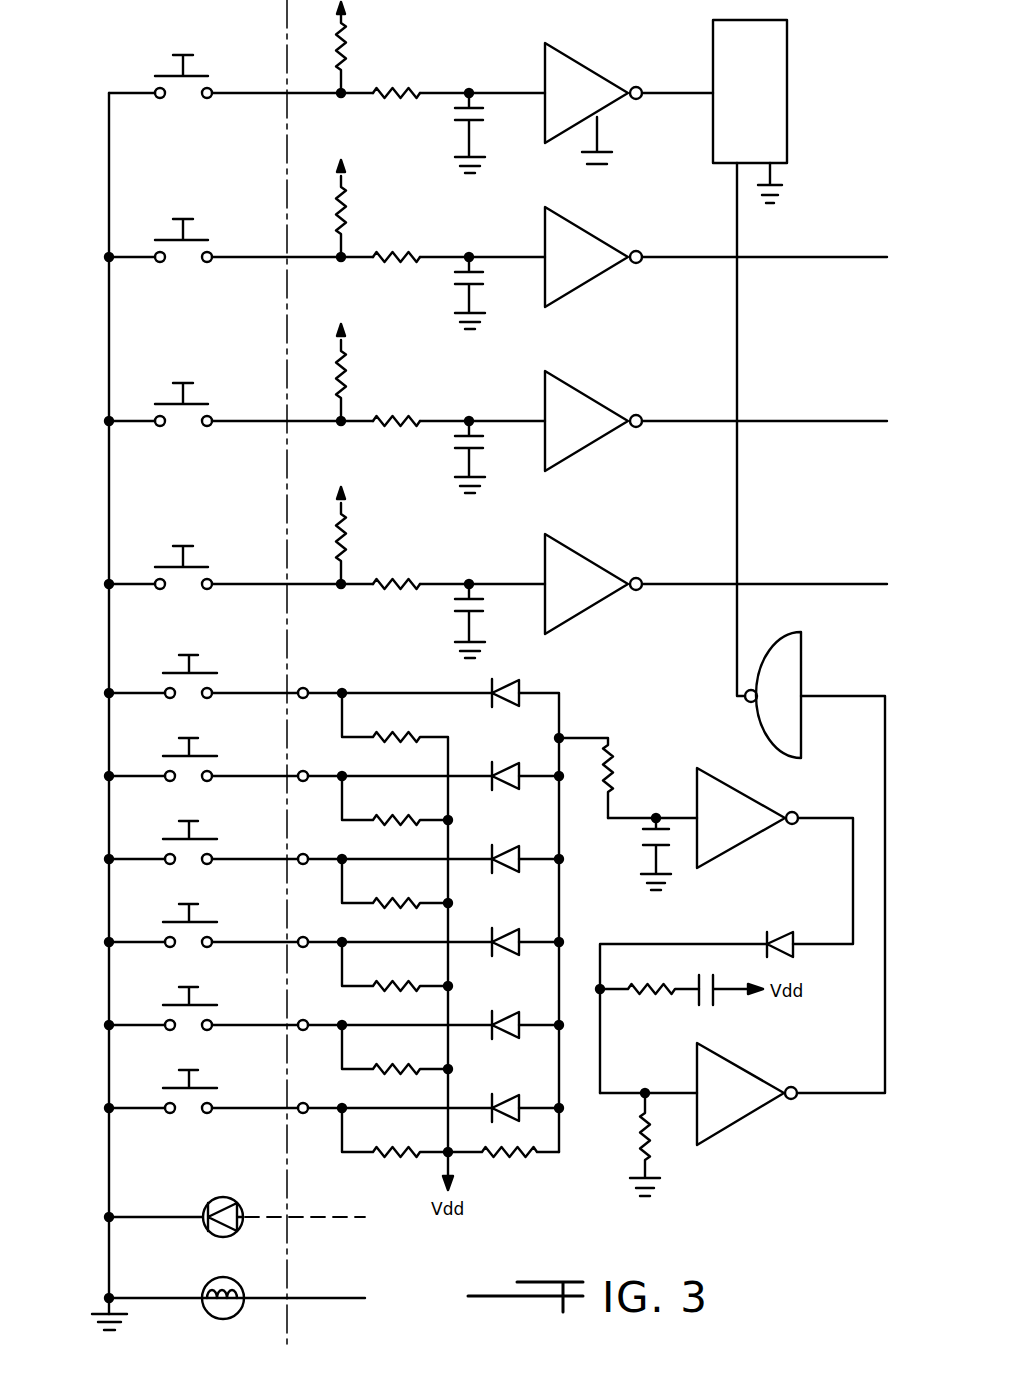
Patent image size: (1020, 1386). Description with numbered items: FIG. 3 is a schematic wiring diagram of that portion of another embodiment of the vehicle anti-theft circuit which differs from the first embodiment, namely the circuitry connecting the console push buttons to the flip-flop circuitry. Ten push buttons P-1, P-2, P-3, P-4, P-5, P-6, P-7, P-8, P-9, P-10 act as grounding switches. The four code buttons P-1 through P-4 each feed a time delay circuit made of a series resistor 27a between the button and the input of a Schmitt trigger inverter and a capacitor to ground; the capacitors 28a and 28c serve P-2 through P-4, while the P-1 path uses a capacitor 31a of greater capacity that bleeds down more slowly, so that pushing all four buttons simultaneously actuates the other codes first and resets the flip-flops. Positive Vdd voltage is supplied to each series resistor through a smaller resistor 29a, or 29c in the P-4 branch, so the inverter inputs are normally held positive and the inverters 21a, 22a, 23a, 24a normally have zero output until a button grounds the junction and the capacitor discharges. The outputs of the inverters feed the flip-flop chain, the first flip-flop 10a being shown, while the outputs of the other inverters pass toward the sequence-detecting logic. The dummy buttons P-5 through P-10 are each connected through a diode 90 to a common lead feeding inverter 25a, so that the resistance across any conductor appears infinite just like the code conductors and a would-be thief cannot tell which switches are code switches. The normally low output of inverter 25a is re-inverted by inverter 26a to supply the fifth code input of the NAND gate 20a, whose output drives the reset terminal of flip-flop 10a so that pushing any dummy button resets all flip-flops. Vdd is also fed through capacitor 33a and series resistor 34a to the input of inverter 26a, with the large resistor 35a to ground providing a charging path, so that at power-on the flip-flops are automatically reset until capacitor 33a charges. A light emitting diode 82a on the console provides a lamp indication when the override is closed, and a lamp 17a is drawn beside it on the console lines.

The push button P-1 is at (200, 72).
The push button P-2 is at (200, 236).
The push button P-3 is at (200, 400).
The push button P-4 is at (200, 563).
The push button P-5 is at (203, 669).
The push button P-6 is at (203, 752).
The push button P-7 is at (203, 835).
The push button P-8 is at (203, 918).
The push button P-9 is at (203, 1001).
The push button P-10 is at (203, 1084).
The resistor 29a is at (348, 40).
The resistor 29c is at (349, 533).
The series resistor 27a is at (405, 90).
The capacitor 31a is at (455, 128).
The capacitor 28a is at (455, 294).
The capacitor 28c is at (455, 458).
The Schmitt trigger inverter 21a is at (581, 105).
The Schmitt trigger inverter 22a is at (581, 269).
The Schmitt trigger inverter 23a is at (581, 433).
The Schmitt trigger inverter 24a is at (581, 596).
The Schmitt trigger inverter 25a is at (734, 830).
The inverter 26a is at (734, 1105).
The flip-flop 10a is at (764, 79).
The NAND gate 20a is at (803, 652).
The diode 90 is at (497, 683).
The capacitor 33a is at (715, 1000).
The series resistor 34a is at (648, 997).
The resistor 35a is at (656, 1142).
The light emitting diode 82a is at (240, 1200).
The lamp 17a is at (243, 1284).